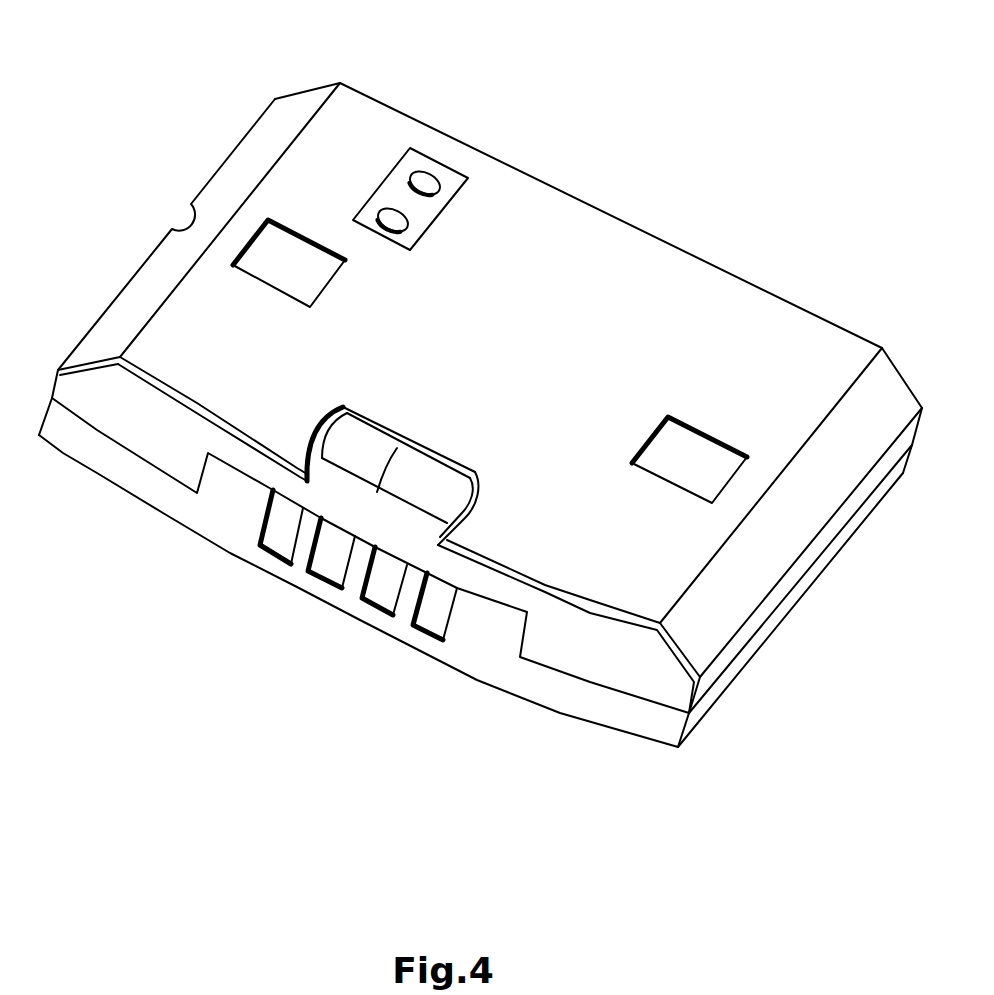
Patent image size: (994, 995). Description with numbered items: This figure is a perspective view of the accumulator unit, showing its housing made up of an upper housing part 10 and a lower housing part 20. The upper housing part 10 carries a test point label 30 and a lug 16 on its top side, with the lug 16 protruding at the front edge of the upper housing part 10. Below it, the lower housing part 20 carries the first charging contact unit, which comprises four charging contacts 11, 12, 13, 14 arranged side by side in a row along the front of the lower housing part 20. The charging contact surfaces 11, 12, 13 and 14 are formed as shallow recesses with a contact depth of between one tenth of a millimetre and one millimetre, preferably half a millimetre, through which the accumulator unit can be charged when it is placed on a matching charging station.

The upper housing part 10 is at (755, 328).
The charging contact 11 is at (278, 545).
The charging contact 12 is at (328, 567).
The charging contact 13 is at (380, 590).
The charging contact 14 is at (430, 617).
The lug 16 is at (418, 477).
The lower housing part 20 is at (642, 728).
The test point label 30 is at (387, 193).